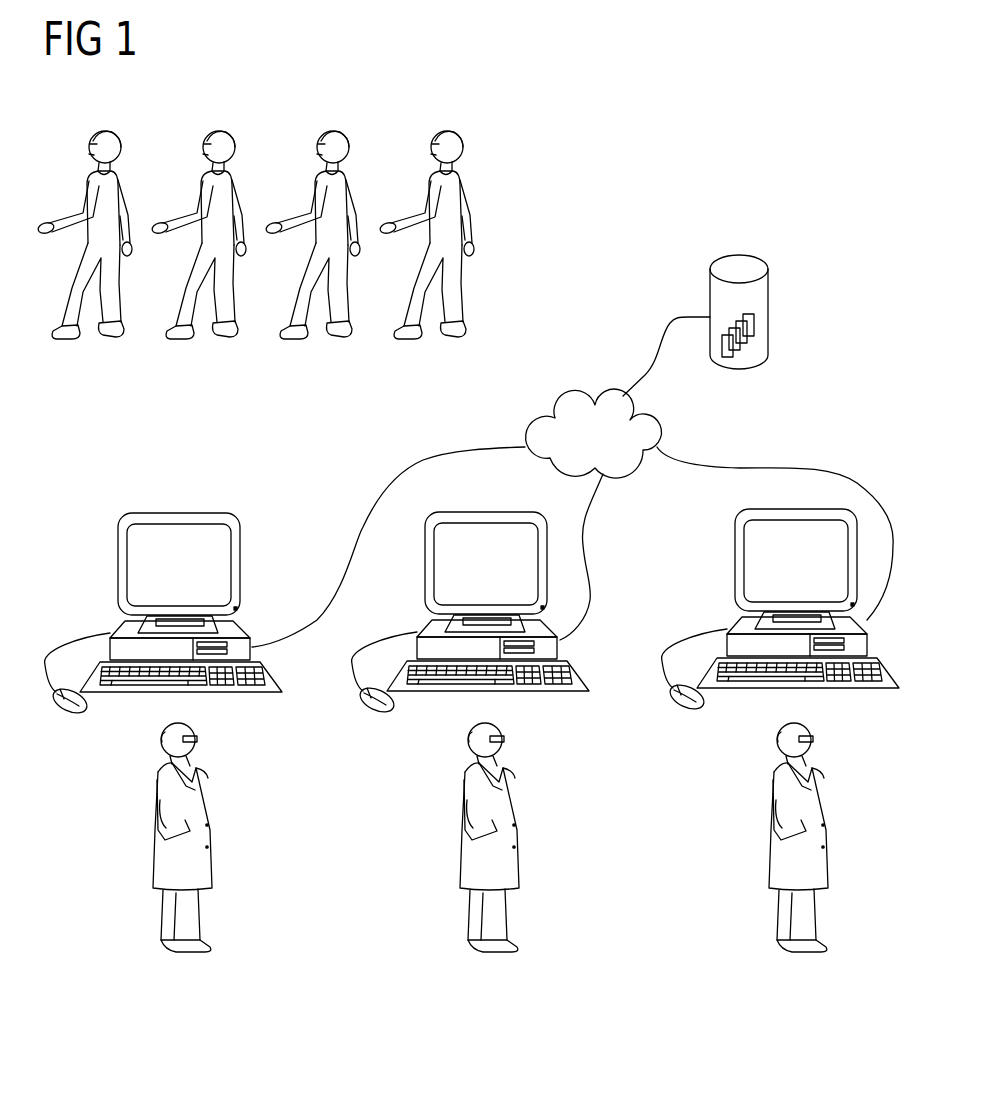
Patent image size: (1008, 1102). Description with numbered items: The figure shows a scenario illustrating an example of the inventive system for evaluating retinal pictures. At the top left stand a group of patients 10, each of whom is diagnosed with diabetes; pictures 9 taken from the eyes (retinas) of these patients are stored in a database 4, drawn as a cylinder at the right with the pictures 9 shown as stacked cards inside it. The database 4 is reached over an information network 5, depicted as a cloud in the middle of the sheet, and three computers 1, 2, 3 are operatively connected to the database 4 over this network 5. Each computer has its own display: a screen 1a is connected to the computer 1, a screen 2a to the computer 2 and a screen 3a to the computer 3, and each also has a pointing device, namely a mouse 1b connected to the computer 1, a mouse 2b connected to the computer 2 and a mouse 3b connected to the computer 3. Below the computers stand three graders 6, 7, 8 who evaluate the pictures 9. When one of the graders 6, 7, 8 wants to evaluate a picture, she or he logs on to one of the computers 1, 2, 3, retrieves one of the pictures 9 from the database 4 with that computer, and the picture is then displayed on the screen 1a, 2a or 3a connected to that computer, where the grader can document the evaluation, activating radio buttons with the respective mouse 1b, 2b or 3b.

The computer 1 is at (163, 639).
The screen 1a is at (122, 558).
The mouse 1b is at (78, 716).
The computer 2 is at (470, 638).
The screen 2a is at (458, 563).
The mouse 2b is at (384, 698).
The computer 3 is at (780, 635).
The screen 3a is at (768, 560).
The mouse 3b is at (694, 695).
The database 4 is at (740, 317).
The information network 5 is at (560, 410).
The grader 6 is at (205, 810).
The grader 7 is at (507, 837).
The grader 8 is at (816, 837).
The pictures 9 is at (722, 346).
The group of patients 10 is at (168, 334).